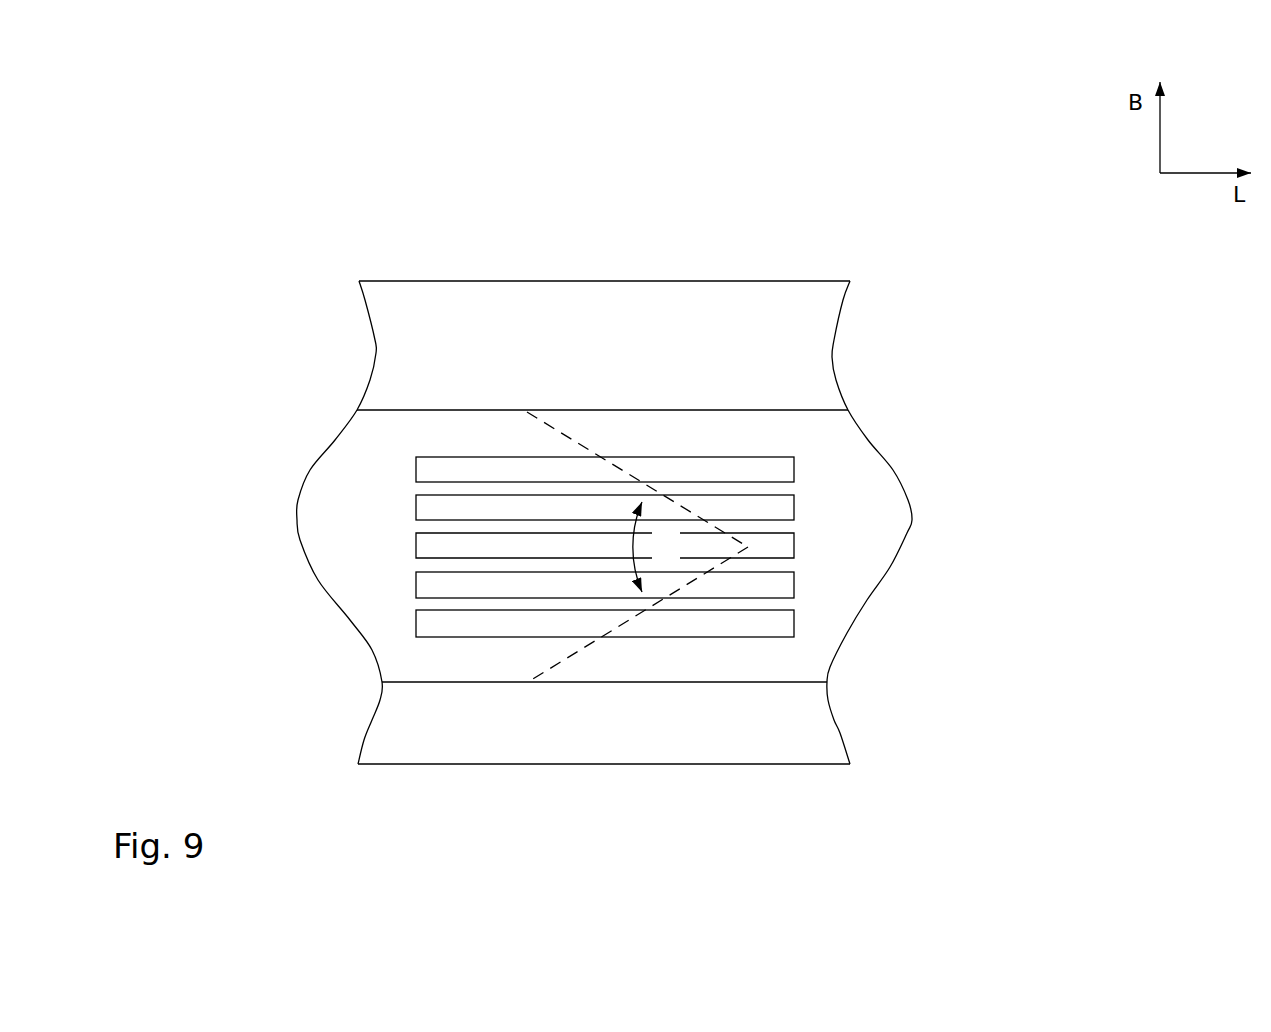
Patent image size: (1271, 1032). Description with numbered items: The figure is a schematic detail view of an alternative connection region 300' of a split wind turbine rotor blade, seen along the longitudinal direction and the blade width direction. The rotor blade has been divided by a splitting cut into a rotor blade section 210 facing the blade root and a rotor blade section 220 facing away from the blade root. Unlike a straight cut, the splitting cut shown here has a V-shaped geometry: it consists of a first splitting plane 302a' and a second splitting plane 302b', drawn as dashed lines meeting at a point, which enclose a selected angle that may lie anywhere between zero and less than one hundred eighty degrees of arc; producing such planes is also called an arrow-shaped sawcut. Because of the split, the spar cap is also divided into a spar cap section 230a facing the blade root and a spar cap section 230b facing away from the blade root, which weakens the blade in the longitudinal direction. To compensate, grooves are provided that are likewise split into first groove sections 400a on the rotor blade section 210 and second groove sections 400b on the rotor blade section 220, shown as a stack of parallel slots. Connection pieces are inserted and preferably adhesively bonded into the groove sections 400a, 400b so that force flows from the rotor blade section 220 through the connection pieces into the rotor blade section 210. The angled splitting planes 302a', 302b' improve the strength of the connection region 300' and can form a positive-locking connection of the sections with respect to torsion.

The connection region 300' is at (567, 429).
The rotor blade section facing away from the blade root 220 is at (864, 358).
The rotor blade section facing the blade root 210 is at (313, 663).
The spar cap section facing the blade root 230a is at (499, 653).
The spar cap section facing away from the blade root 230b is at (830, 593).
The first groove sections 400a is at (443, 452).
The second groove sections 400b is at (748, 452).
The first splitting plane 302a' is at (637, 346).
The second splitting plane 302b' is at (638, 739).